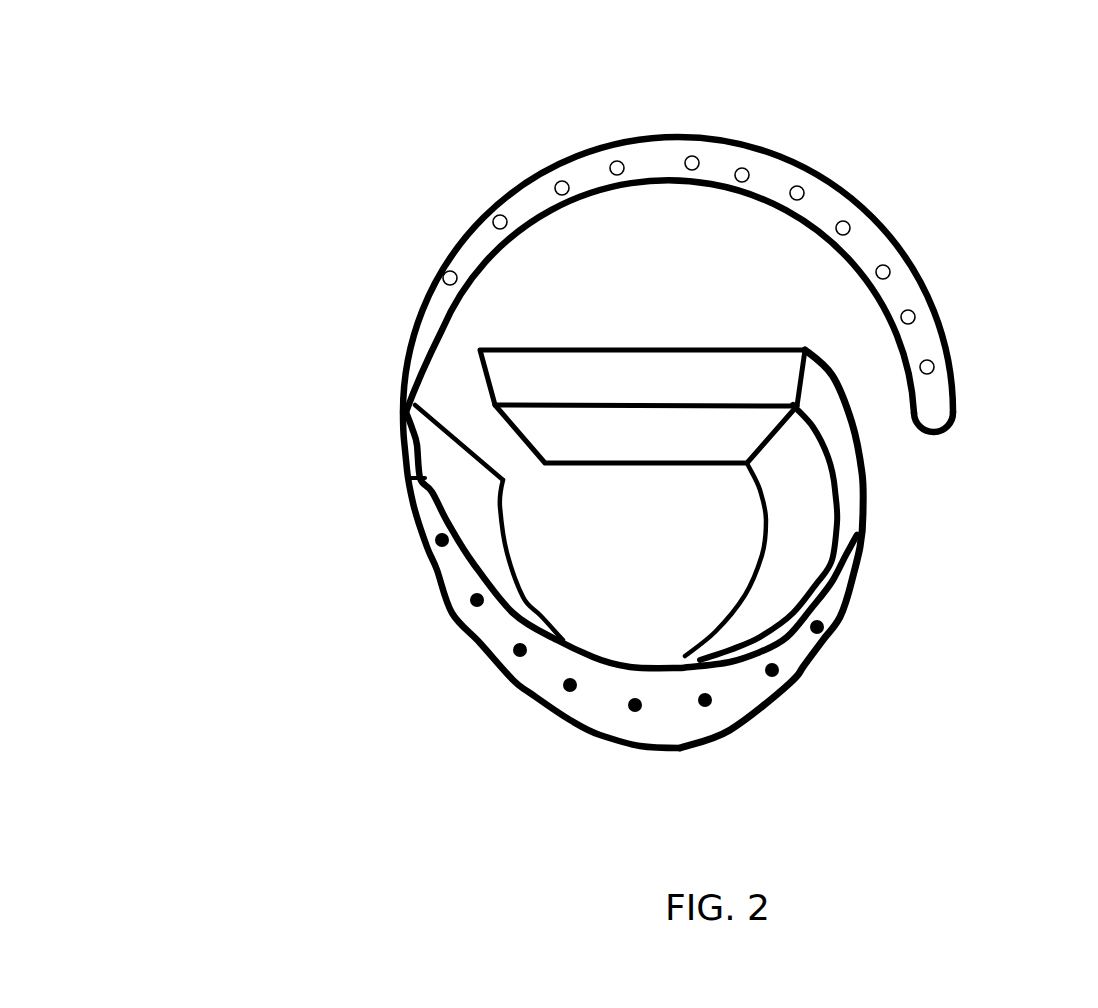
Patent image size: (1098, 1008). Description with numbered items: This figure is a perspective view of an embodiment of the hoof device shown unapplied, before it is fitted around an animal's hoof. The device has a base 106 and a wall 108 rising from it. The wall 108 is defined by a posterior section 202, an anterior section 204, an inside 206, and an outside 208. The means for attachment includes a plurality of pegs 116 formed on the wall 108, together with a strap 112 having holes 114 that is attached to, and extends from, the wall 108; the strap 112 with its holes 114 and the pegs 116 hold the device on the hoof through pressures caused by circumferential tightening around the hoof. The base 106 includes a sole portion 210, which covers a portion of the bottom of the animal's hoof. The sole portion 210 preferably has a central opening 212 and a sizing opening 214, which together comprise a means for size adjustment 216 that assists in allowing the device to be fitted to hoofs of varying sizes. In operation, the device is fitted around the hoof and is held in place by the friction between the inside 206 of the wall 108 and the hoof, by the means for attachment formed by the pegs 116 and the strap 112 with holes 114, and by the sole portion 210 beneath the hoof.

The base 106 is at (580, 713).
The wall 108 is at (497, 635).
The strap 112 is at (577, 178).
The holes 114 is at (890, 276).
The pegs 116 is at (777, 675).
The posterior section 202 is at (560, 383).
The anterior section 204 is at (647, 690).
The inside 206 is at (830, 447).
The outside 208 is at (830, 612).
The sole portion 210 is at (615, 433).
The central opening 212 is at (590, 557).
The sizing opening 214 is at (470, 433).
The means for size adjustment 216 is at (308, 632).